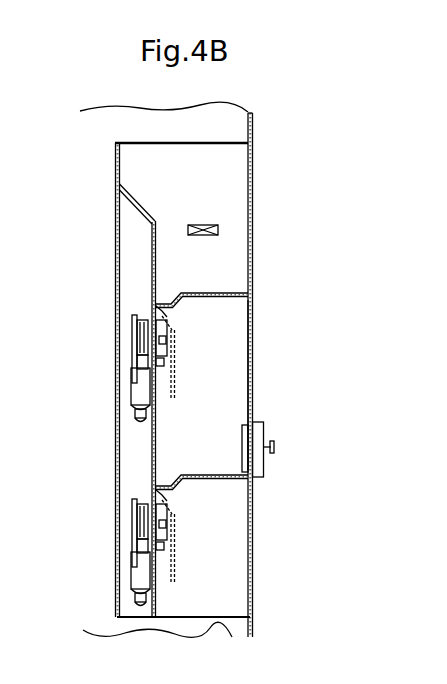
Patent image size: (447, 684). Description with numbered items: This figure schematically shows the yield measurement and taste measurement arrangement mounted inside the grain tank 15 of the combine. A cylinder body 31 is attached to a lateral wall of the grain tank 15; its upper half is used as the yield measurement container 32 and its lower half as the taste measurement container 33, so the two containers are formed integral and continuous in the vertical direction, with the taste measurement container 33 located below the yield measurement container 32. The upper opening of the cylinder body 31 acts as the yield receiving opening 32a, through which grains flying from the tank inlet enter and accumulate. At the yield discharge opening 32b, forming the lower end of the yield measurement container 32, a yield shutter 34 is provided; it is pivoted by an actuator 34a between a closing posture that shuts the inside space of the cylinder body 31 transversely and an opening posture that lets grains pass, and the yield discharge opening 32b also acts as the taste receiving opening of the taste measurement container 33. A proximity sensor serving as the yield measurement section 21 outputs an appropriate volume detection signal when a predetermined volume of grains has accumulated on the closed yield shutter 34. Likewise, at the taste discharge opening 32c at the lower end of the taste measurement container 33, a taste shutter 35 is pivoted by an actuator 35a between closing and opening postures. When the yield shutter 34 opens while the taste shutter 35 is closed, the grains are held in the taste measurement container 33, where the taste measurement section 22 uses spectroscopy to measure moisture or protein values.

The grain tank 15 is at (254, 125).
The yield measurement section 21 is at (187, 228).
The taste measurement section 22 is at (258, 433).
The cylinder body 31 is at (248, 380).
The yield measurement container 32 is at (225, 258).
The yield receiving opening 32a is at (173, 143).
The yield discharge opening 32b is at (210, 303).
The taste discharge opening 32c is at (225, 618).
The taste measurement container 33 is at (223, 410).
The yield shutter 34 is at (236, 294).
The actuator 34a is at (135, 390).
The taste shutter 35 is at (231, 480).
The actuator 35a is at (135, 577).